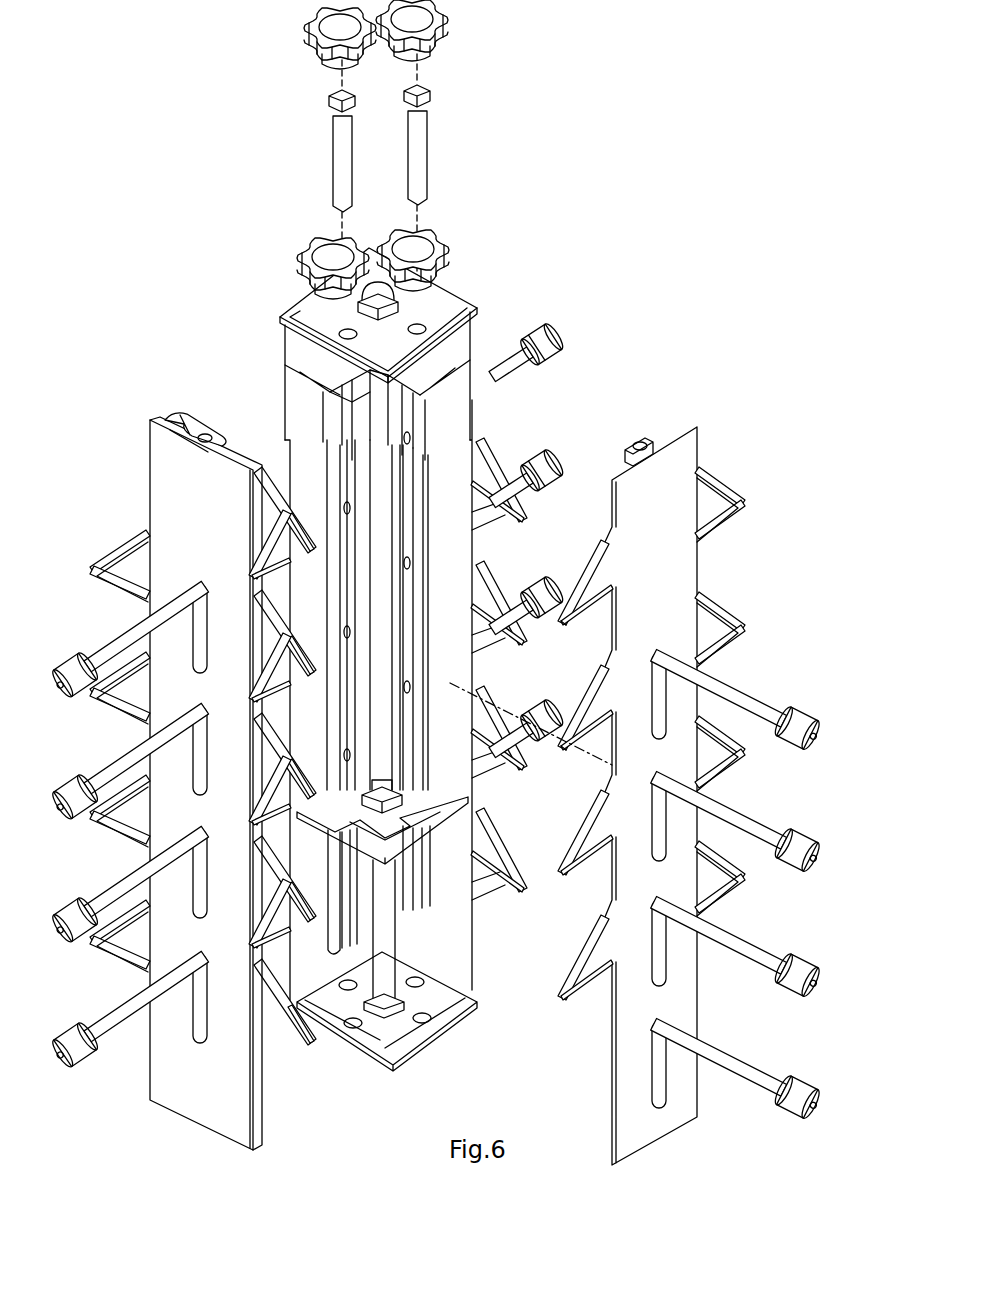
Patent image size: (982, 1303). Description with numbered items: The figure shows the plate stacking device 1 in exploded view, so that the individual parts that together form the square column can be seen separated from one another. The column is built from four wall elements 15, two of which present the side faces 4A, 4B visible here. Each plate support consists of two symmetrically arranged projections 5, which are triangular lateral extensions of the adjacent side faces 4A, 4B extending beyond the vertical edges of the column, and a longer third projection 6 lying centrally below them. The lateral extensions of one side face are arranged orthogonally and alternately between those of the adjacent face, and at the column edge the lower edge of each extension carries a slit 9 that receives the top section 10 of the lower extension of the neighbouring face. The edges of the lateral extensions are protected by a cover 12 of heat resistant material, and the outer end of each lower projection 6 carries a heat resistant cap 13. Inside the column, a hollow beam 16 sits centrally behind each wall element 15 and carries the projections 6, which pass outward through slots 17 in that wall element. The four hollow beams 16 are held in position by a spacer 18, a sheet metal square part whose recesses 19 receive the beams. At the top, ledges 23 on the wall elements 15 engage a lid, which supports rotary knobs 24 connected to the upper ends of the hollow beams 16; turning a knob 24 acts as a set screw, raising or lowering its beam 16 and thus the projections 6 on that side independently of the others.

The plate stacking device 1 is at (722, 290).
The side face 4A is at (163, 483).
The side face 4B is at (677, 443).
The projection 5 is at (550, 567).
The third projection 6 is at (545, 462).
The slit 9 is at (133, 638).
The top section 10 is at (140, 532).
The cover 12 is at (507, 713).
The heat resistant cap 13 is at (545, 335).
The wall element 15 is at (683, 456).
The hollow beam 16 is at (423, 893).
The slot 17 is at (175, 837).
The spacer 18 is at (470, 408).
The recess 19 is at (425, 830).
The ledge 23 is at (230, 455).
The rotary knob 24 is at (640, 440).